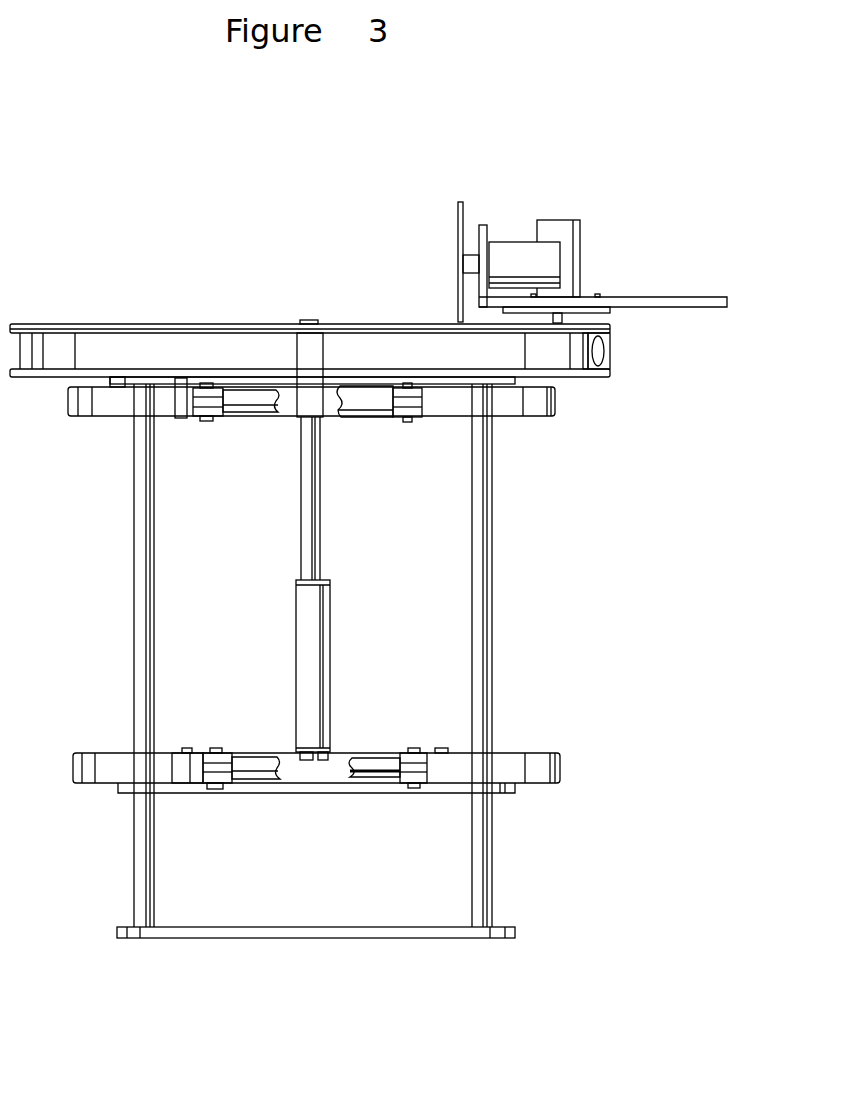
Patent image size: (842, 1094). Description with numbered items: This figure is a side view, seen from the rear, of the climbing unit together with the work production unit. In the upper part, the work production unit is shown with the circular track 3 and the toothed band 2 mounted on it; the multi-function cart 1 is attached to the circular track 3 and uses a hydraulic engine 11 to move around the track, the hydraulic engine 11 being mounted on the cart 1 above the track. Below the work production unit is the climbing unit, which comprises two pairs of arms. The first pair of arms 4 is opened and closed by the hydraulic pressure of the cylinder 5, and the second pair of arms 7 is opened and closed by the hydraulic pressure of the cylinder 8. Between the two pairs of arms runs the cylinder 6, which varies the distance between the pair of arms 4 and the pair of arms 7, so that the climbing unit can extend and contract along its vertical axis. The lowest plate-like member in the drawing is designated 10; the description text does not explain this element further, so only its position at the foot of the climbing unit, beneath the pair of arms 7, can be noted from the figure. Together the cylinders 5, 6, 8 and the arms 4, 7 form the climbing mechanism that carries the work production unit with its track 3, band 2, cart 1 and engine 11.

The multi-function cart 1 is at (677, 297).
The toothed band 2 is at (610, 327).
The circular track 3 is at (612, 371).
The pair of arms 4 is at (540, 402).
The cylinder 5 is at (367, 402).
The cylinder 6 is at (307, 542).
The pair of arms 7 is at (537, 752).
The cylinder 8 is at (385, 790).
The base plate 10 is at (440, 933).
The hydraulic engine 11 is at (560, 228).